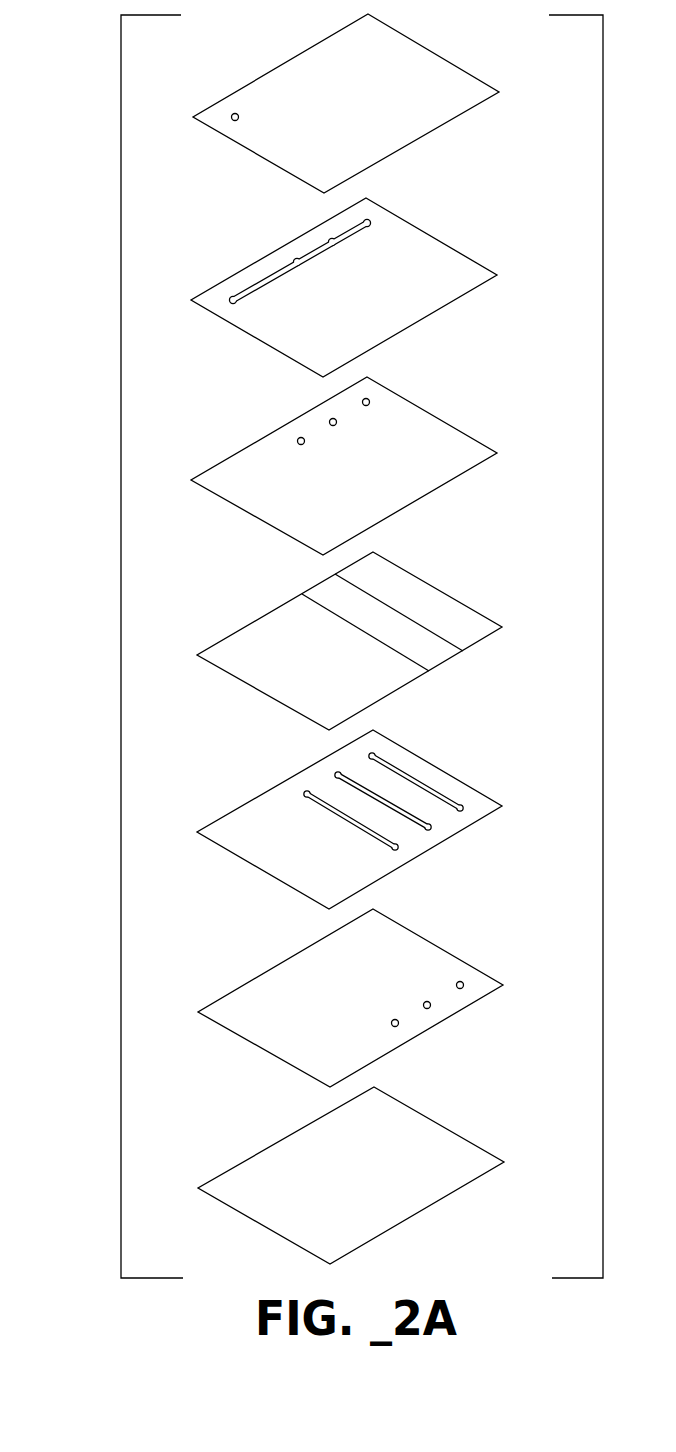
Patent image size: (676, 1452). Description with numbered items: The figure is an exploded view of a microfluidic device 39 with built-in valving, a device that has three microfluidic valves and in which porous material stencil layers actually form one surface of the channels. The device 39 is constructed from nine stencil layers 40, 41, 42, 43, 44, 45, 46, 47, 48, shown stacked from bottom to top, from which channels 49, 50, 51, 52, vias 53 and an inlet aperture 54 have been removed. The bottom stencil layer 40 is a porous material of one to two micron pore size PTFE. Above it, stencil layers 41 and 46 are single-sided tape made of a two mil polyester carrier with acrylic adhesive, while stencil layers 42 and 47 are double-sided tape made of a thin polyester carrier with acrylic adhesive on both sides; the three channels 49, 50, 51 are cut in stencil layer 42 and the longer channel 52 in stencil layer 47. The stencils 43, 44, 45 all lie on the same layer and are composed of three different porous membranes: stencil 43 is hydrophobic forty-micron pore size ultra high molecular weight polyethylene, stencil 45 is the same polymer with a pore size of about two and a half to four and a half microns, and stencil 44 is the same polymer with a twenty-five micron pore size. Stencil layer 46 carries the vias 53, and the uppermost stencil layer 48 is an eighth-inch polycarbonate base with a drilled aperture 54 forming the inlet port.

The microfluidic device 39 is at (112, 683).
The stencil layer 40 is at (488, 1160).
The stencil layer 41 is at (488, 983).
The stencil layer 42 is at (488, 805).
The stencil 43 is at (271, 612).
The stencil 44 is at (457, 656).
The stencil 45 is at (487, 622).
The stencil layer 46 is at (480, 450).
The stencil layer 47 is at (482, 273).
The stencil layer 48 is at (508, 63).
The channel 49 is at (305, 793).
The channel 50 is at (337, 773).
The channel 51 is at (383, 757).
The channel 52 is at (245, 292).
The vias 53 is at (298, 437).
The inlet aperture 54 is at (234, 112).